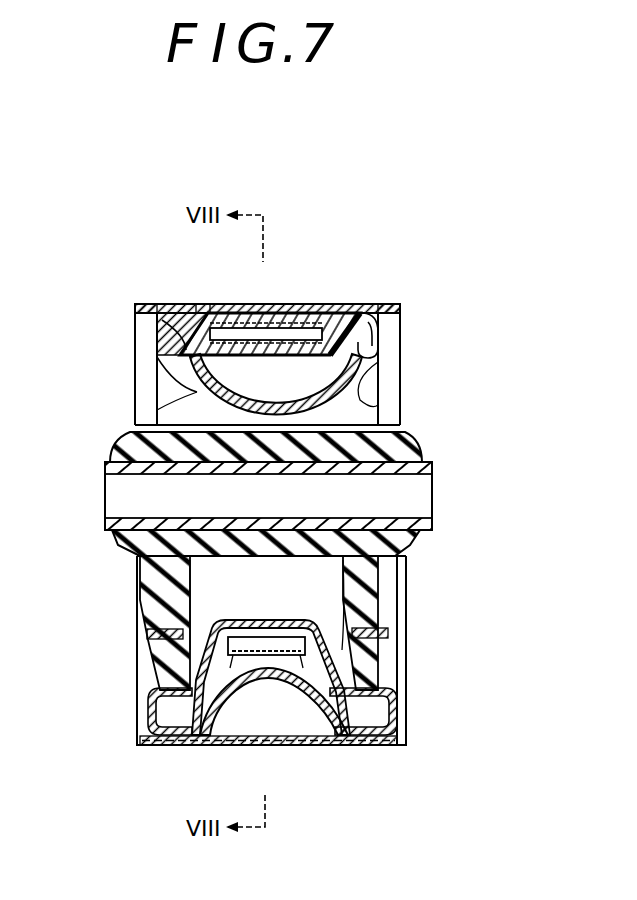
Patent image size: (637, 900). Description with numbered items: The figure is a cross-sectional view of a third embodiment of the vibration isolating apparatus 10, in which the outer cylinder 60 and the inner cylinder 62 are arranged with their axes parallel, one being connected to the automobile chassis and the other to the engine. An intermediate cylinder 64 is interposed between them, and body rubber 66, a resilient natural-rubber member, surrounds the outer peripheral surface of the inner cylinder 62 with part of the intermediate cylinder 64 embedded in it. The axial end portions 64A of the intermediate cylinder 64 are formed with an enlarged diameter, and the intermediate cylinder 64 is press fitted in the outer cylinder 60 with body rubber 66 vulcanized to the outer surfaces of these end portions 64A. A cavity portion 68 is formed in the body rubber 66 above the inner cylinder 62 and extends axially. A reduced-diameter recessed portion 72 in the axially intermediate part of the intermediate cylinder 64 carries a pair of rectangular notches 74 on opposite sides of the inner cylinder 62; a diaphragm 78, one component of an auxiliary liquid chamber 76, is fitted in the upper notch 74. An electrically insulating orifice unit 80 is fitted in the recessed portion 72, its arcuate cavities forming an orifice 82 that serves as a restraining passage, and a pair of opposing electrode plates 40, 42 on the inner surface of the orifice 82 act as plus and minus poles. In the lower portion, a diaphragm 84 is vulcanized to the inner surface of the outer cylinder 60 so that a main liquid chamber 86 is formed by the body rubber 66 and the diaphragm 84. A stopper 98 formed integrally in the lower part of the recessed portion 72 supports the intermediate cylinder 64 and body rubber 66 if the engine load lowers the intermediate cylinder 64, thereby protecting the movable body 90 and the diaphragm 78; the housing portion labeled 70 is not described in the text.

The vibration isolating apparatus 10 is at (461, 288).
The electrode plate 40 is at (297, 306).
The electrode plate 42 is at (400, 352).
The outer cylinder 60 is at (356, 304).
The inner cylinder 62 is at (432, 466).
The intermediate cylinder 64 is at (381, 700).
The end portions 64A is at (400, 318).
The body rubber 66 is at (395, 550).
The cavity portion 68 is at (360, 385).
The lower housing 70 is at (390, 745).
The reduced-diameter recessed portion 72 is at (178, 310).
The rectangular notches 74 is at (400, 410).
The auxiliary liquid chamber 76 is at (247, 391).
The diaphragm 78 is at (157, 410).
The orifice unit 80 is at (201, 304).
The orifice 82 is at (243, 322).
The diaphragm 84 is at (303, 695).
The main liquid chamber 86 is at (260, 589).
The movable body 90 is at (268, 672).
The stopper 98 is at (303, 628).